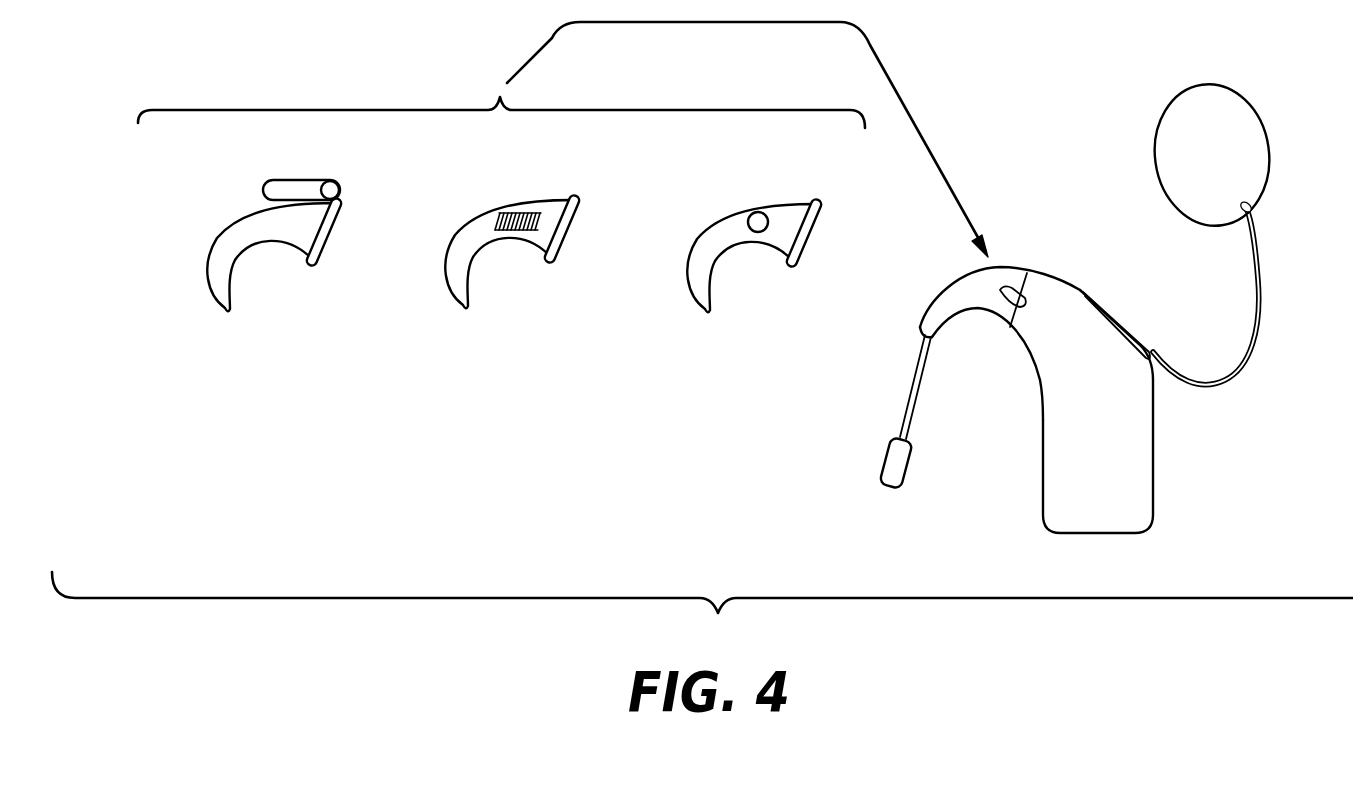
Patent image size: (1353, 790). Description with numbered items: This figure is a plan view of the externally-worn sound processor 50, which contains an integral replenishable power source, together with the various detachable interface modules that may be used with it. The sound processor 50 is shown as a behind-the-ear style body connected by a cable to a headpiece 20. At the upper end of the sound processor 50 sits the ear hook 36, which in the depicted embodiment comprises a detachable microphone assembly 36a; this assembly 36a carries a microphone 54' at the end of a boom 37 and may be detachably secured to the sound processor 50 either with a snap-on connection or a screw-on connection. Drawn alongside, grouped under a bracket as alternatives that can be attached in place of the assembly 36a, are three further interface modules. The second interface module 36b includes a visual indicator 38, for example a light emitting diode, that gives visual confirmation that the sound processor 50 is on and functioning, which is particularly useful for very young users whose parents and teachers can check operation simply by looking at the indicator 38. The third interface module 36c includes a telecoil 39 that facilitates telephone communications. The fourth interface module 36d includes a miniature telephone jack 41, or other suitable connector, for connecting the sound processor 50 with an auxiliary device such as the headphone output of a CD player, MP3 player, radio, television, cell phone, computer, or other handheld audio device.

The headpiece 20 is at (1155, 152).
The ear hook 36 is at (940, 380).
The detachable microphone assembly 36a is at (943, 285).
The second interface module 36b is at (713, 222).
The third interface module 36c is at (473, 222).
The fourth interface module 36d is at (235, 218).
The boom 37 is at (905, 383).
The visual indicator 38 is at (758, 215).
The telecoil 39 is at (523, 213).
The miniature telephone jack 41 is at (305, 178).
The sound processor 50 is at (1153, 452).
The microphone 54' is at (856, 469).